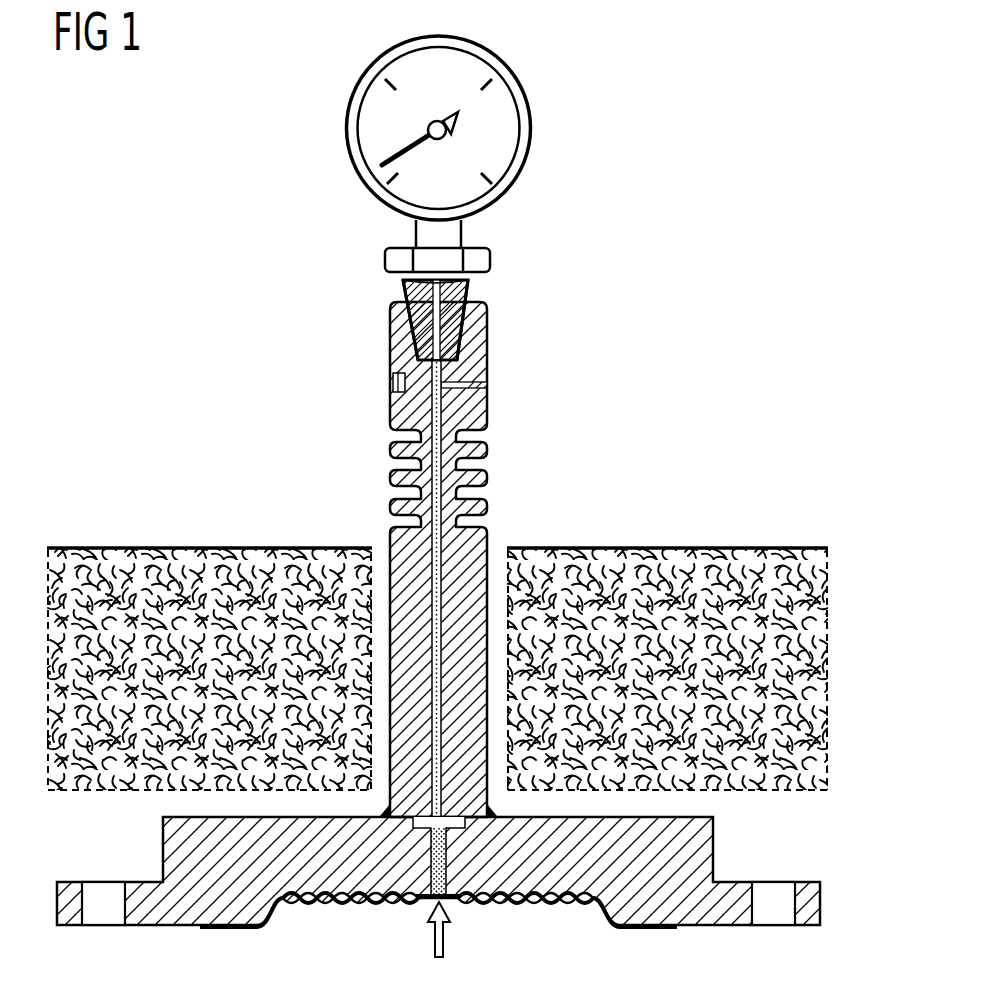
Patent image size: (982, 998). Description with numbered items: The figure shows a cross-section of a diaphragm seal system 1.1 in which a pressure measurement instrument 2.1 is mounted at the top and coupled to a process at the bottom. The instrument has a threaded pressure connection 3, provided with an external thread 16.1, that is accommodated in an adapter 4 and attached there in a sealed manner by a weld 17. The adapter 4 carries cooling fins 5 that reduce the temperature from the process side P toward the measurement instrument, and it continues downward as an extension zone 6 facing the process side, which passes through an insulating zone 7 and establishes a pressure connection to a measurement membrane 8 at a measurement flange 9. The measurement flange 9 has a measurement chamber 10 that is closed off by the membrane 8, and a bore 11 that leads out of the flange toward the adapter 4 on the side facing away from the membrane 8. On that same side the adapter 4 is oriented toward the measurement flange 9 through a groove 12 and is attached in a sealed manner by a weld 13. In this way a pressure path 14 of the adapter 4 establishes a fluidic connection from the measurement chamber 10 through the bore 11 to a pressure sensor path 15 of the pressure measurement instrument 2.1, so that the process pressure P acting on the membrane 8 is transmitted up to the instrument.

The diaphragm seal system 1.1 is at (242, 279).
The pressure measurement instrument 2.1 is at (557, 38).
The threaded pressure connection 3 is at (460, 325).
The adapter 4 is at (477, 363).
The cooling fins 5 is at (390, 478).
The extension zone 6 is at (490, 590).
The insulating zone 7 is at (685, 548).
The measurement membrane 8 is at (353, 903).
The measurement flange 9 is at (172, 912).
The measurement chamber 10 is at (542, 905).
The bore 11 is at (448, 848).
The groove 12 is at (413, 904).
The weld 13 is at (383, 815).
The pressure path 14 is at (430, 553).
The pressure sensor path 15 is at (408, 326).
The external thread 16.1 is at (408, 343).
The weld 17 is at (403, 296).
The process side P is at (443, 947).